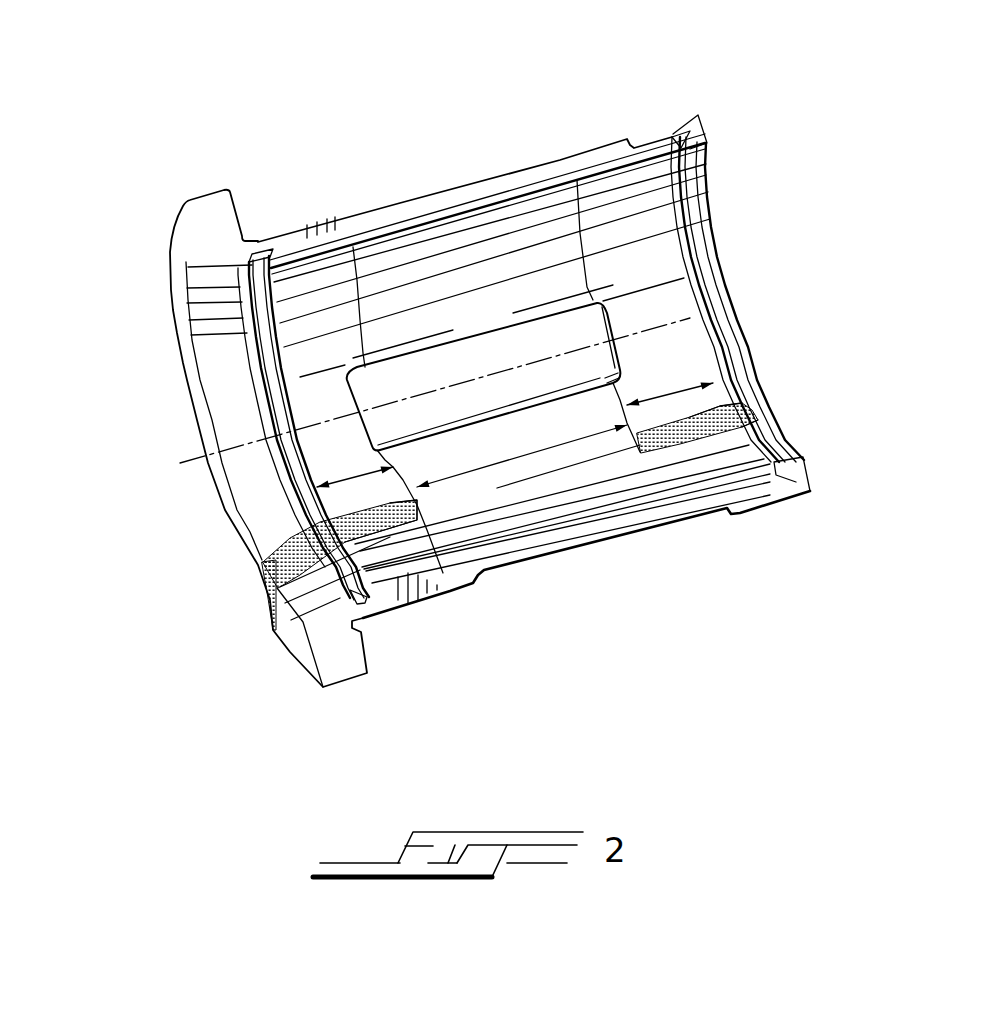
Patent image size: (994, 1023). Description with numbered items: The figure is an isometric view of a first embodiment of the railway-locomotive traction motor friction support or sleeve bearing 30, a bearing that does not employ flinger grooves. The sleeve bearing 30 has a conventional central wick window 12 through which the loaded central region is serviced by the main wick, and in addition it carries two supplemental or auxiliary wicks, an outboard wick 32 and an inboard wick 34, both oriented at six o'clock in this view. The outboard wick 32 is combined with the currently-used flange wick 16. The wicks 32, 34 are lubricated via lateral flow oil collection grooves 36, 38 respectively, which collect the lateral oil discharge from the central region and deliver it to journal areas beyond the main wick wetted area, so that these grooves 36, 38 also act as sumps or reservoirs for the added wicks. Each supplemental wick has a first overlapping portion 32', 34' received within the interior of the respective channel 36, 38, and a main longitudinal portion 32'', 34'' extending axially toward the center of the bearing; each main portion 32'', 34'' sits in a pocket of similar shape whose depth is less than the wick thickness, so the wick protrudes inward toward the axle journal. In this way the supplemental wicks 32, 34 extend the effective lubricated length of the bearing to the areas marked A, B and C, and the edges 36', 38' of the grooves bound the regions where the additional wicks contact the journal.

The sleeve bearing 30 is at (368, 116).
The central wick window 12 is at (580, 333).
The flange wick 16 is at (268, 602).
The outboard supplemental wick 32 is at (372, 512).
The first overlapping portion of outboard wick 32' is at (191, 583).
The main longitudinal portion of outboard wick 32'' is at (427, 600).
The inboard supplemental wick 34 is at (731, 425).
The first overlapping portion of inboard wick 34' is at (816, 454).
The main longitudinal portion of inboard wick 34'' is at (796, 377).
The lateral flow oil collection groove 36 is at (250, 346).
The first groove inner edge 36' is at (458, 450).
The lateral flow oil collection groove 38 is at (705, 222).
The second groove inner edge 38' is at (633, 395).